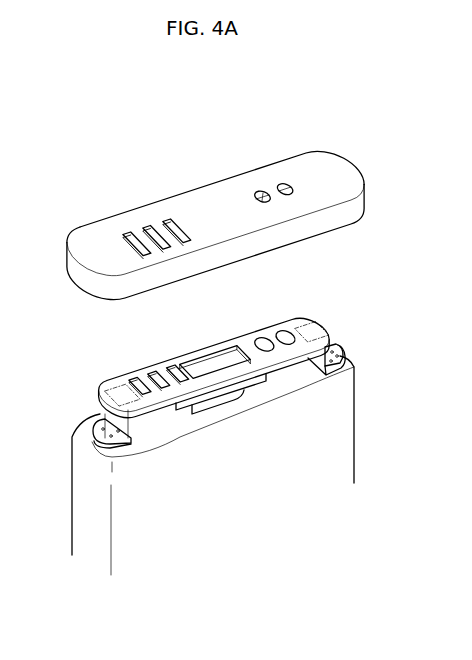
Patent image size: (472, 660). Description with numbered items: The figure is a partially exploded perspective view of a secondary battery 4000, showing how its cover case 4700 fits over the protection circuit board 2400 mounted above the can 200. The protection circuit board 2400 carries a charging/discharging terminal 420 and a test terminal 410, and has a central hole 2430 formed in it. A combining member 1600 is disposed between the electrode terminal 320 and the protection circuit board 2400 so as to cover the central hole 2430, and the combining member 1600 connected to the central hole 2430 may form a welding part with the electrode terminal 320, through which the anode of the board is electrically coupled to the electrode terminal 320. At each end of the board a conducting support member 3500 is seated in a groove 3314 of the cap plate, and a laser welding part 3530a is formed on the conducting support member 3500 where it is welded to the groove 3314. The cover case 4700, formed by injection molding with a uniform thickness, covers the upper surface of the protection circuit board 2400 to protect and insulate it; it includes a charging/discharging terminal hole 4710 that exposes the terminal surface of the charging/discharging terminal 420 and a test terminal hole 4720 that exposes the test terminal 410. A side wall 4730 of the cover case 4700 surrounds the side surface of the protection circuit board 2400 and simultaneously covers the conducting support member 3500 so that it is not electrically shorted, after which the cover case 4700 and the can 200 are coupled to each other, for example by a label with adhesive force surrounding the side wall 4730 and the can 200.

The secondary battery 4000 is at (42, 116).
The cover case 4700 is at (72, 221).
The charging/discharging terminal hole 4710 is at (160, 226).
The test terminal hole 4720 is at (287, 184).
The side wall 4730 is at (337, 218).
The protection circuit board 2400 is at (93, 376).
The charging/discharging terminal 420 is at (154, 371).
The central hole 2430 is at (213, 359).
The test terminal 410 is at (283, 333).
The combining member 1600 is at (255, 382).
The electrode terminal 320 is at (212, 411).
The conducting support member 3500 is at (88, 414).
The laser welding part 3530a is at (96, 425).
The groove 3314 is at (91, 438).
The can 200 is at (356, 437).